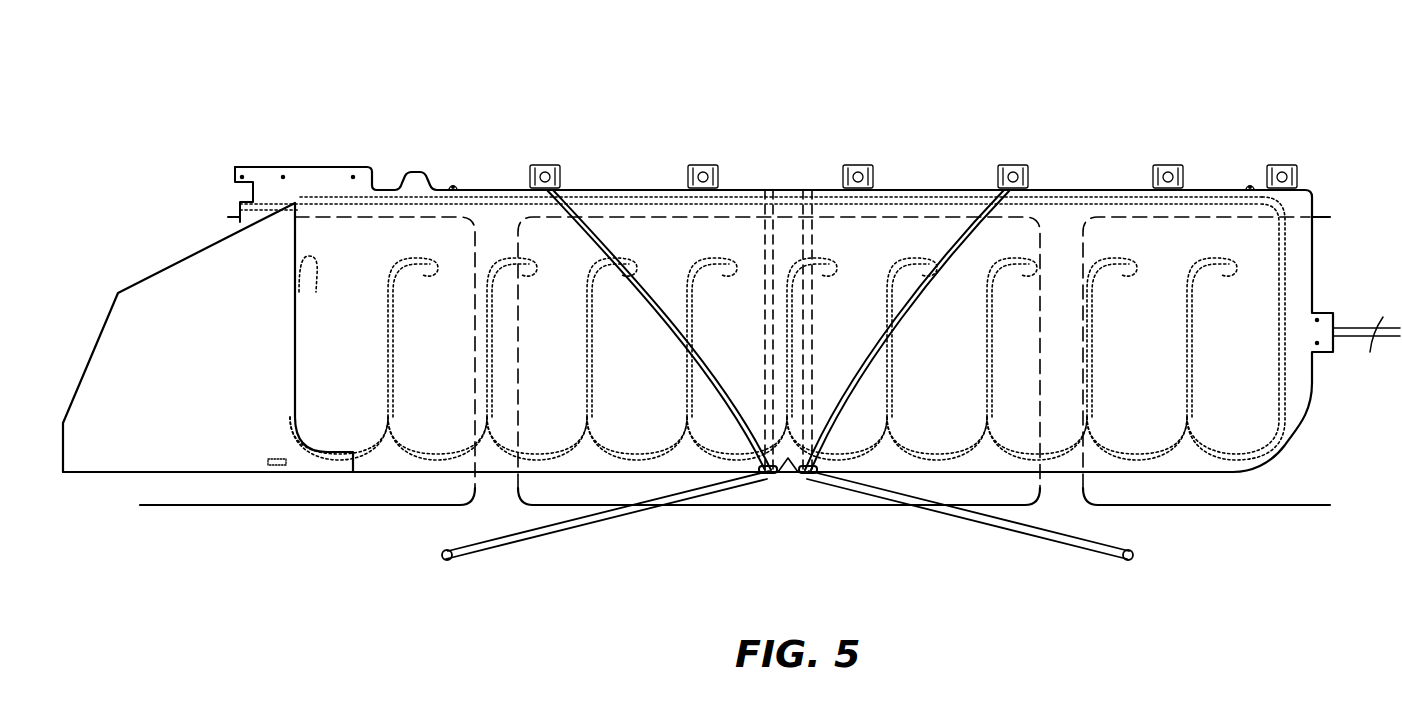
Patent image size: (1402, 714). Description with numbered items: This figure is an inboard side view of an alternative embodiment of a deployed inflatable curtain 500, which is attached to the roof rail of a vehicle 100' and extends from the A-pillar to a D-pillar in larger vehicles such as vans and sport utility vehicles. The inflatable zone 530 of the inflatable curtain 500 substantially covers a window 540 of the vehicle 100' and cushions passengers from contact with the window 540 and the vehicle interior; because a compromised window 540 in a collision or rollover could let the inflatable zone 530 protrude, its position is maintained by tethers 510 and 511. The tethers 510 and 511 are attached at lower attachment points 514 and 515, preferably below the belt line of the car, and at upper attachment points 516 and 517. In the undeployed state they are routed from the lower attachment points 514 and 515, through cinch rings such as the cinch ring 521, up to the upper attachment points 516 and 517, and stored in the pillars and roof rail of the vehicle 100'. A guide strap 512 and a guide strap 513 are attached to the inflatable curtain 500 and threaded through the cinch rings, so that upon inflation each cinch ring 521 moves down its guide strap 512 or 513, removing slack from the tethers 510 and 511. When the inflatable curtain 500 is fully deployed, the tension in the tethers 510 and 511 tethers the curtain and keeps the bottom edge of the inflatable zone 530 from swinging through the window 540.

The inflatable curtain 500 is at (1230, 112).
The vehicle 100' is at (648, 390).
The inflatable zone 530 is at (656, 366).
The window 540 is at (1025, 490).
The upper attachment point 517 is at (545, 160).
The upper attachment point 516 is at (1035, 178).
The guide strap 512 is at (765, 248).
The guide strap 513 is at (812, 303).
The cinch ring 521 is at (781, 487).
The tether 510 is at (590, 530).
The tether 511 is at (1020, 535).
The lower attachment point 515 is at (447, 562).
The lower attachment point 514 is at (1130, 562).